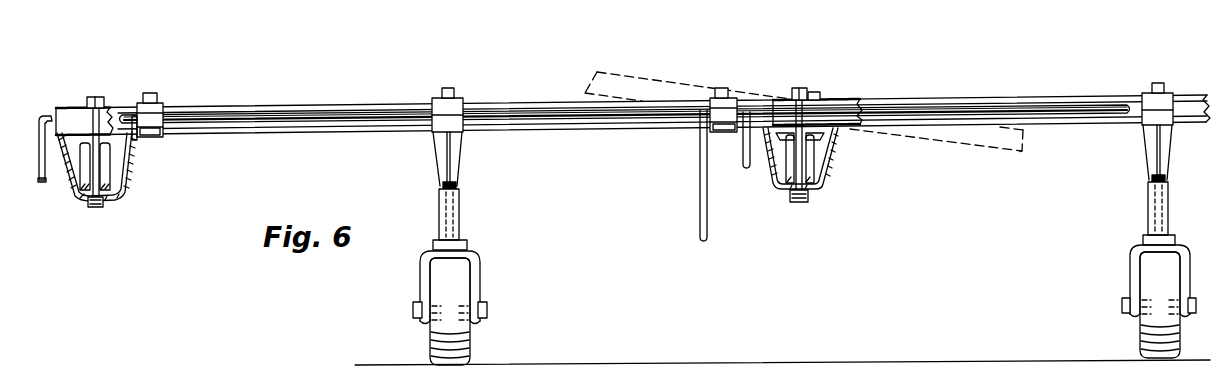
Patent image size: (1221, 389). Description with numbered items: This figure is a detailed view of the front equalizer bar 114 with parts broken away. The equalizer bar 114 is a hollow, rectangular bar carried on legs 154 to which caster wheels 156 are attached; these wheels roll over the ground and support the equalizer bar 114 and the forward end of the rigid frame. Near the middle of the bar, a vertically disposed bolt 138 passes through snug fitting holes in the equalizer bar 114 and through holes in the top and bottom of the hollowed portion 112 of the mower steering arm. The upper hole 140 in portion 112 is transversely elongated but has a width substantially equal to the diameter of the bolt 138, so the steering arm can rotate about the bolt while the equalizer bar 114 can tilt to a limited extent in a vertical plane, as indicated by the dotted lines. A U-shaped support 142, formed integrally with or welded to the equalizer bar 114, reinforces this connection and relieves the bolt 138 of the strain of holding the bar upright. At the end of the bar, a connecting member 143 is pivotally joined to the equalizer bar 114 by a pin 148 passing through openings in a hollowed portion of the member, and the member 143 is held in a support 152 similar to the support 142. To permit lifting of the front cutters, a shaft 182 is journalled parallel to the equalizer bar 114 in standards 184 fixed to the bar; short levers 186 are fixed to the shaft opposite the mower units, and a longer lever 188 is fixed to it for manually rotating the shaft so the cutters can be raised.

The equalizer bar 114 is at (348, 105).
The shaft 182 is at (505, 113).
The standards 184 is at (152, 117).
The pin 148 is at (100, 98).
The support 152 is at (75, 198).
The connecting member 143 is at (107, 158).
The short levers 186 is at (43, 182).
The longer lever 188 is at (702, 178).
The bolt 138 is at (800, 100).
The U-shaped support 142 is at (830, 178).
The portion of mower steering arm 112 is at (810, 165).
The upper hole 140 is at (793, 135).
The legs 154 is at (453, 168).
The caster wheels 156 is at (462, 338).